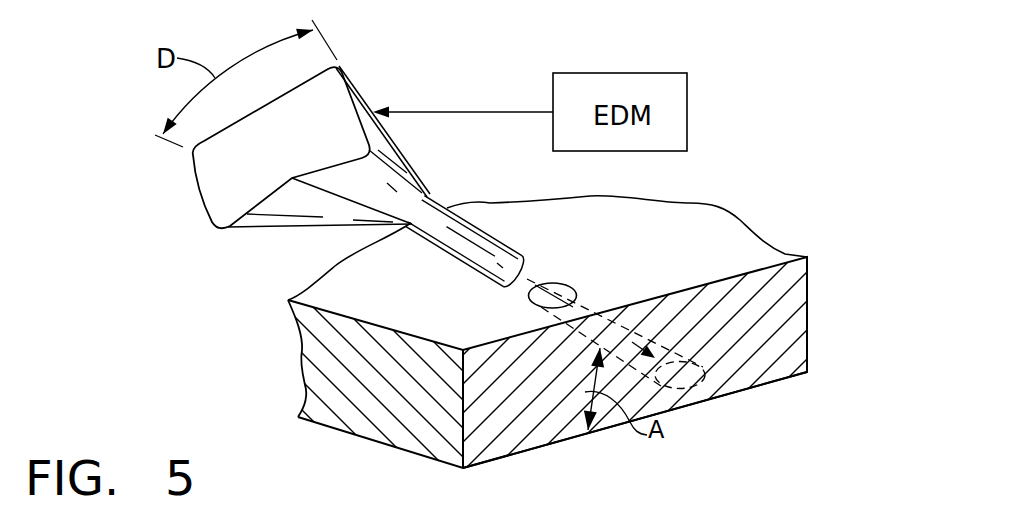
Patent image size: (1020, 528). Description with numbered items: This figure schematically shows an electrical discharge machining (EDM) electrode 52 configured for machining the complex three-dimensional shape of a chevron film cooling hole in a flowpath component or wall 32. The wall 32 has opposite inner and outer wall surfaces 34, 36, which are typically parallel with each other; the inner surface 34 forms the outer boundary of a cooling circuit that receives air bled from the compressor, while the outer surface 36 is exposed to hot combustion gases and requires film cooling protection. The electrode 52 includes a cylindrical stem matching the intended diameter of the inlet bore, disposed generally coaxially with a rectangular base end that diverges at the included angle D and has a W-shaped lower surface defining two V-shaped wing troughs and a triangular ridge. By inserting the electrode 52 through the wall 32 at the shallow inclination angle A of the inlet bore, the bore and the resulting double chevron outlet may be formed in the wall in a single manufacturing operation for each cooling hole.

The wall 32 is at (726, 206).
The inner wall surface 34 is at (730, 395).
The outer wall surface 36 is at (640, 254).
The electrical discharge machining (EDM) electrode 52 is at (303, 151).